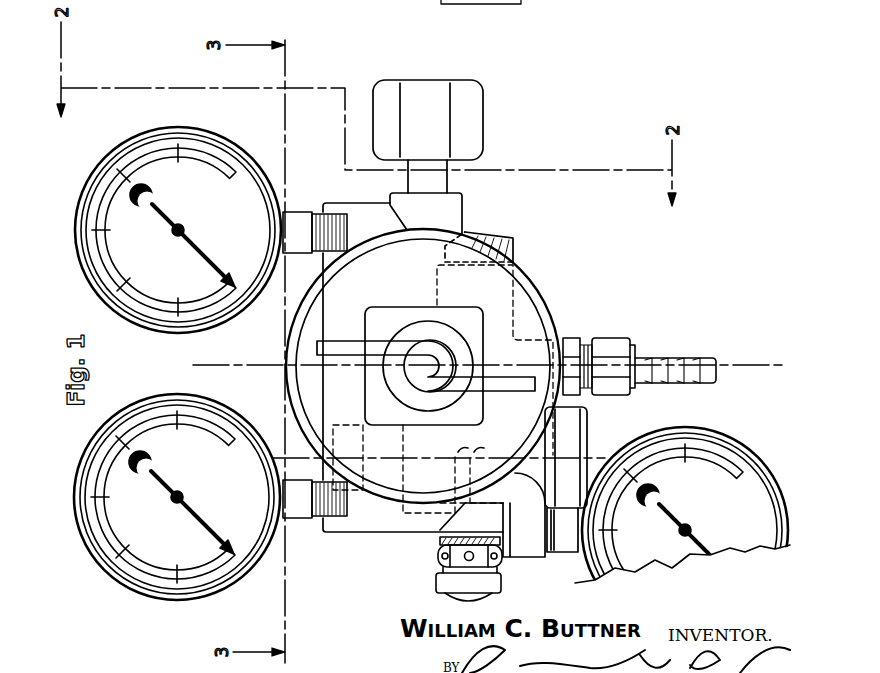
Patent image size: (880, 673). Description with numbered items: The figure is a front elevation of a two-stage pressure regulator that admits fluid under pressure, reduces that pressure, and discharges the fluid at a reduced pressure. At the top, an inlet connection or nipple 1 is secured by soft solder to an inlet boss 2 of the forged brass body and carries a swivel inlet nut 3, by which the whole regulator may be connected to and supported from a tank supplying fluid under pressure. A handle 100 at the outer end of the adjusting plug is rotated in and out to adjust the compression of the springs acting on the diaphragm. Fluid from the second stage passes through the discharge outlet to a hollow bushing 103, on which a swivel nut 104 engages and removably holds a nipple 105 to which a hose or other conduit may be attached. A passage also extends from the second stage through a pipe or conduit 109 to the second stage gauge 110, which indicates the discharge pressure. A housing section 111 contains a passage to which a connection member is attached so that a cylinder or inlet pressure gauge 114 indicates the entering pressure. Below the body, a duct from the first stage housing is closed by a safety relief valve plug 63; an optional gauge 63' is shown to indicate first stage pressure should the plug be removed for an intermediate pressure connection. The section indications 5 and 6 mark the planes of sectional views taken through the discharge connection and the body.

The inlet connection or nipple 1 is at (427, 178).
The inlet boss 2 is at (462, 215).
The swivel inlet nut 3 is at (475, 127).
The section line 5- 5 is at (663, 348).
The section line 6- 6 is at (605, 458).
The safety relief valve plug 63 is at (456, 570).
The gauge 63' is at (682, 512).
The handle 100 is at (360, 350).
The hollow bushing 103 is at (573, 338).
The swivel nut 104 is at (612, 338).
The nipple 105 is at (648, 358).
The pipe or conduit 109 is at (293, 518).
The second stage gauge 110 is at (141, 590).
The housing section 111 is at (345, 203).
The cylinder or inlet pressure gauge 114 is at (78, 207).